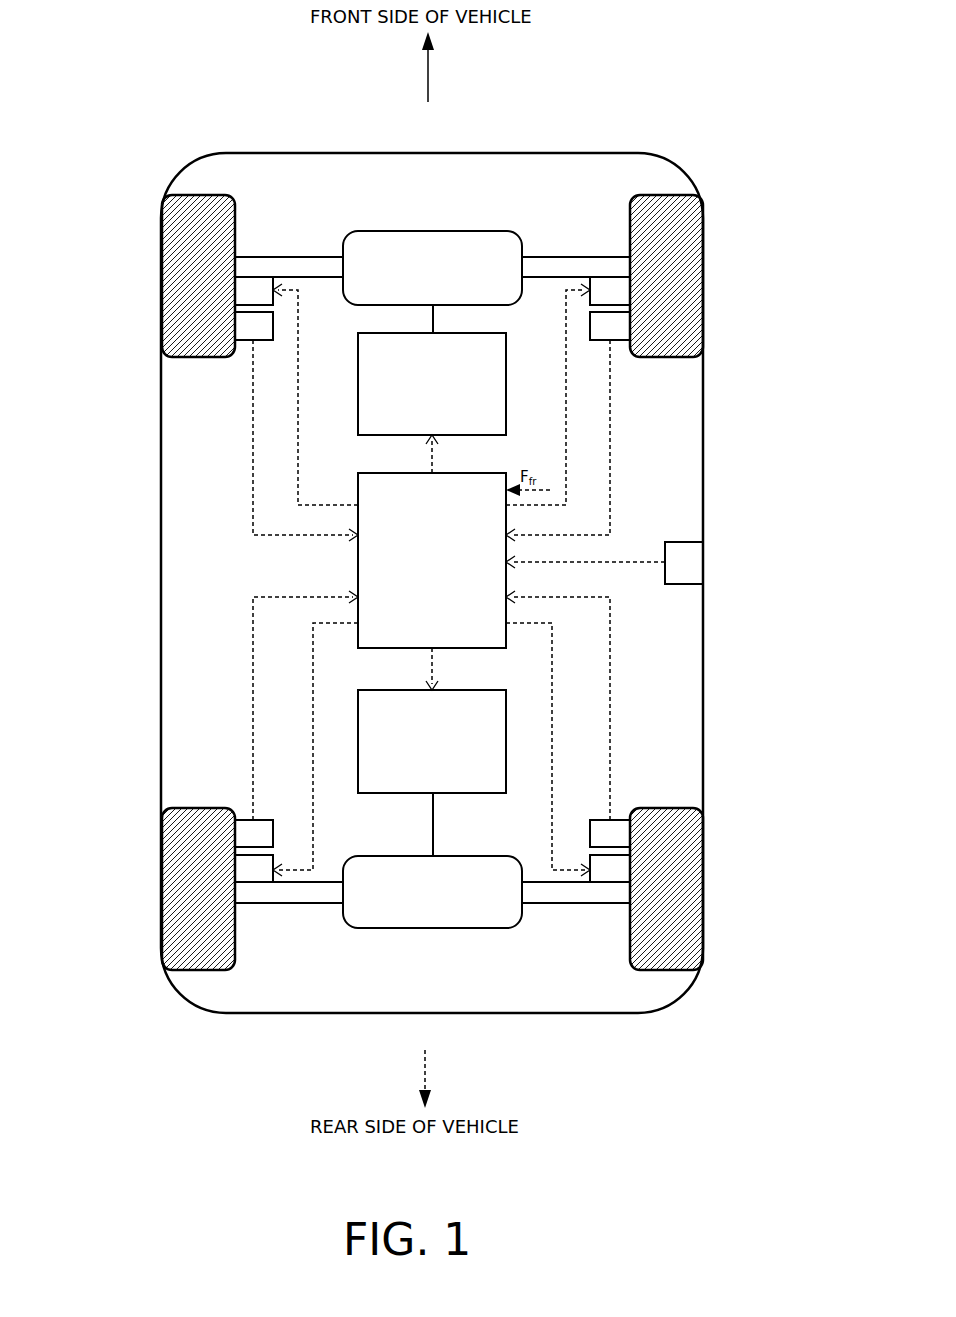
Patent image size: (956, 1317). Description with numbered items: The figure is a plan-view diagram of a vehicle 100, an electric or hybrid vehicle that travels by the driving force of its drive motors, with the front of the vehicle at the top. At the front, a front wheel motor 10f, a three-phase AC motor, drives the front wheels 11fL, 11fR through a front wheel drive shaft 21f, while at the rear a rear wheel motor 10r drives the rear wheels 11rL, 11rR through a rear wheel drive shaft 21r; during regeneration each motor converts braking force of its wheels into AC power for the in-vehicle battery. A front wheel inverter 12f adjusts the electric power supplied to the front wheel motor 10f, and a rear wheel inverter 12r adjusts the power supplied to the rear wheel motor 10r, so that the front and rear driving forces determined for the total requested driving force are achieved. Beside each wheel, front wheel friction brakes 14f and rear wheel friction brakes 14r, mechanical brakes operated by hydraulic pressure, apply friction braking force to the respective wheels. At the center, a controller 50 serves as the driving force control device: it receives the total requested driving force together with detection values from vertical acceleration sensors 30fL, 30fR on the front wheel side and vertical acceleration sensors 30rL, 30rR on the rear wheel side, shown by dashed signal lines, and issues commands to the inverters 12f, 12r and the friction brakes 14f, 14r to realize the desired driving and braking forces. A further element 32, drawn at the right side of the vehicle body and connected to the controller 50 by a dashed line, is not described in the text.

The vehicle 100 is at (552, 154).
The front left wheel 11fL is at (162, 268).
The front right wheel 11fR is at (703, 273).
The rear left wheel 11rL is at (162, 878).
The rear right wheel 11rR is at (703, 883).
The front wheel motor 10f is at (345, 240).
The rear wheel motor 10r is at (345, 905).
The front wheel inverter 12f is at (358, 372).
The rear wheel inverter 12r is at (358, 720).
The front wheel friction brake 14f is at (262, 277).
The rear wheel friction brake 14r is at (255, 882).
The front wheel drive shaft 21f is at (573, 257).
The rear wheel drive shaft 21r is at (555, 903).
The vertical acceleration sensor 30fL is at (240, 342).
The vertical acceleration sensor 30fR is at (620, 342).
The vertical acceleration sensor 30rL is at (240, 818).
The vertical acceleration sensor 30rR is at (625, 818).
The sensor 32 is at (695, 542).
The controller 50 is at (358, 560).